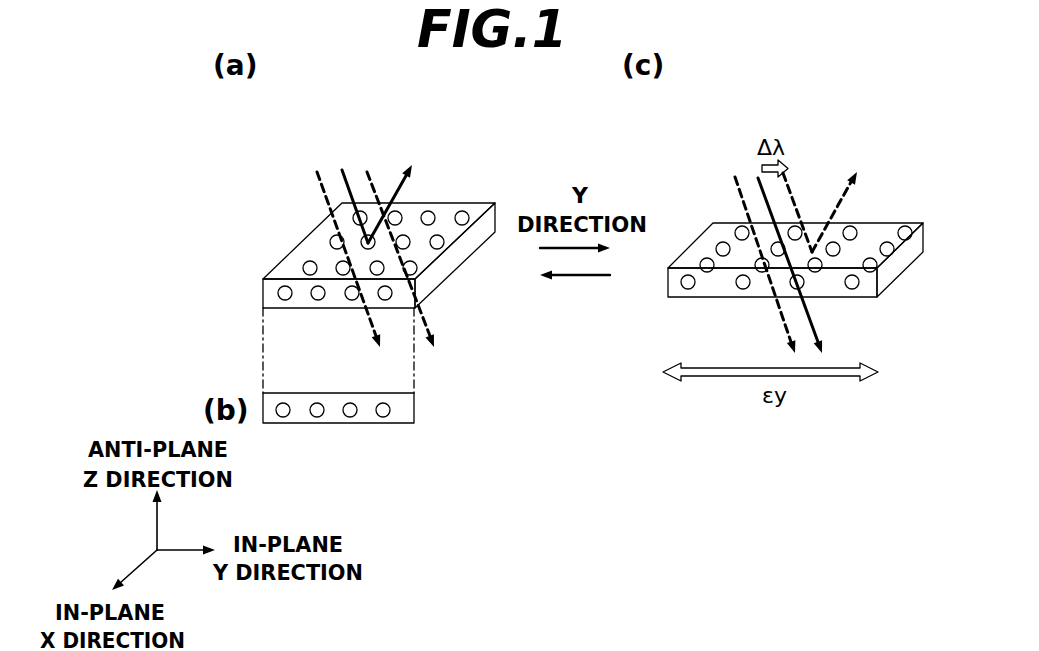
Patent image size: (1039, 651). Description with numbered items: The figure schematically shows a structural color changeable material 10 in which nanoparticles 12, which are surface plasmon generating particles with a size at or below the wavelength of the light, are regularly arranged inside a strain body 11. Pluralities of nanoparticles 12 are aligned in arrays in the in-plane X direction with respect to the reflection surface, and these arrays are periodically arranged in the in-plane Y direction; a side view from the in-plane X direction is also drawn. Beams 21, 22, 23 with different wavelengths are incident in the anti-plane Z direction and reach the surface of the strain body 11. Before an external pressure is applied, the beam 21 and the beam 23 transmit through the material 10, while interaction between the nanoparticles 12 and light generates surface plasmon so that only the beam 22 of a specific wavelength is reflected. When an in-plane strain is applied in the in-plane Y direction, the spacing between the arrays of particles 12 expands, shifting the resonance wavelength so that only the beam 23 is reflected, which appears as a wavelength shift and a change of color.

The structural color changeable material 10 is at (604, 265).
The strain body 11 is at (437, 279).
The nanoparticles 12 is at (464, 214).
The beam 21 is at (315, 173).
The beam 22 is at (346, 192).
The beam 23 is at (372, 170).